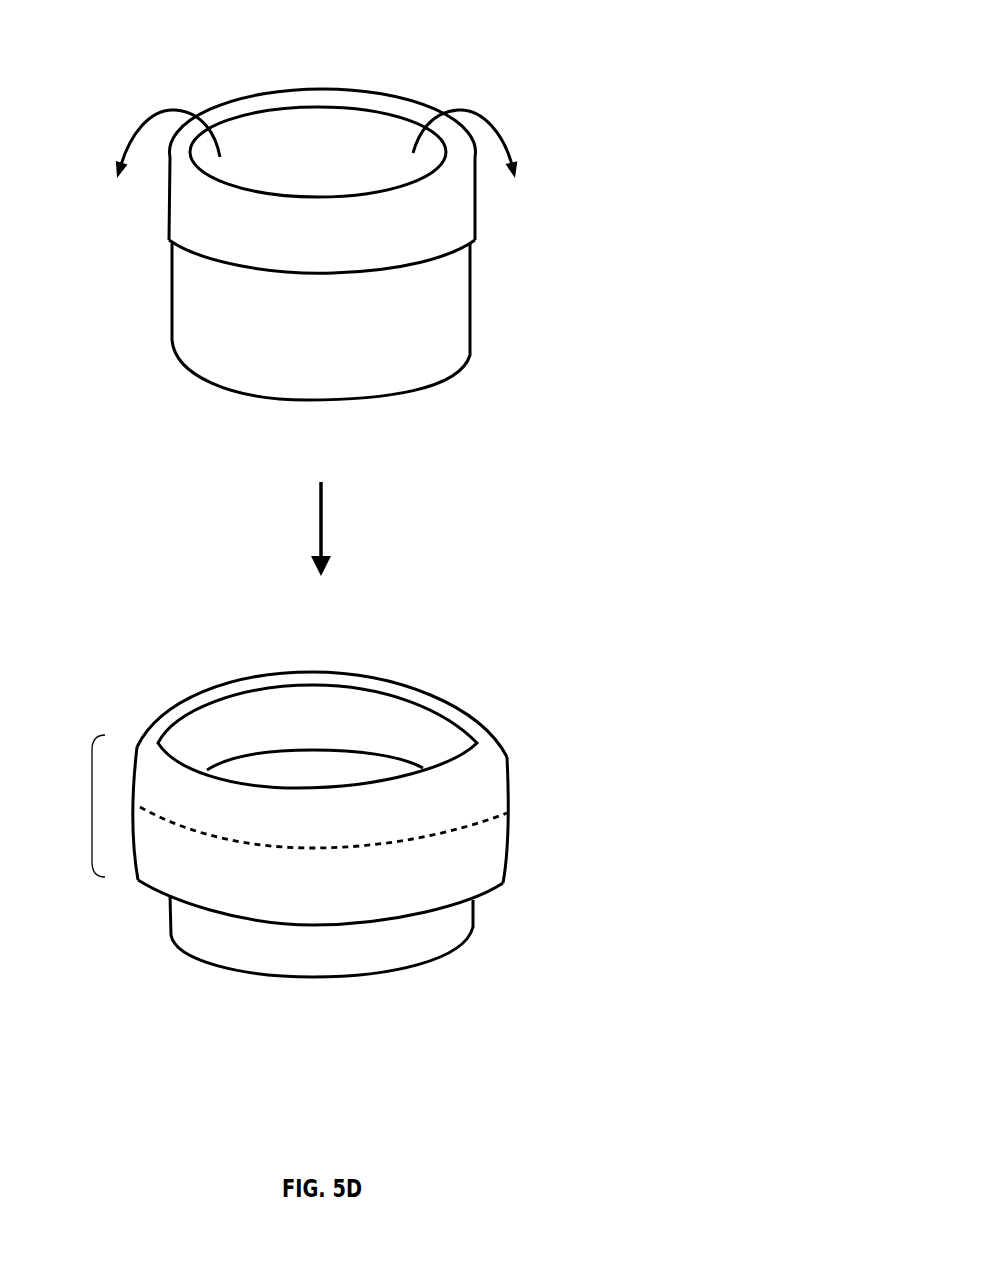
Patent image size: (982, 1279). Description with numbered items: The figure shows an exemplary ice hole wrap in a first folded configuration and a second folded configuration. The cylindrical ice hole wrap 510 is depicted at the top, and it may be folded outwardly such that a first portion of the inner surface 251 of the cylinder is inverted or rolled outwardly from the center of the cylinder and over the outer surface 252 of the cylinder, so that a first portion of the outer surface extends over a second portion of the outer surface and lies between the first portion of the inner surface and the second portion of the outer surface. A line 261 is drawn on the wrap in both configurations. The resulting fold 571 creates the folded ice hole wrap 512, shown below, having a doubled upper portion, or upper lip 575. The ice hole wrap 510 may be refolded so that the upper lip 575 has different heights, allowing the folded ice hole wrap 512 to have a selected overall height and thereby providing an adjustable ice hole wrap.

The cylindrical ice hole wrap 510 is at (174, 52).
The folded ice hole wrap 512 is at (124, 672).
The inner surface 251 is at (303, 132).
The outer surface 252 is at (432, 345).
The seam / fold line 261 is at (362, 272).
The fold 571 is at (445, 700).
The upper lip 575 is at (92, 805).